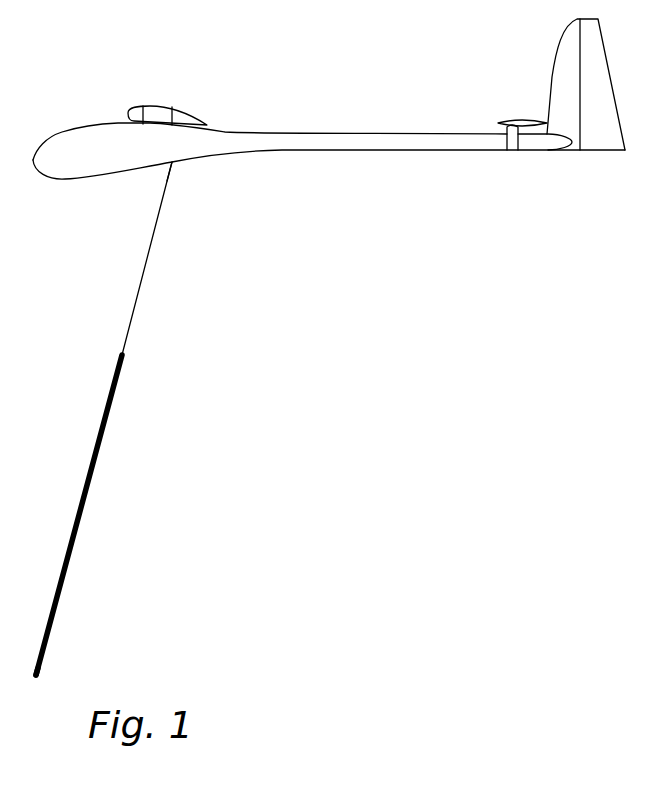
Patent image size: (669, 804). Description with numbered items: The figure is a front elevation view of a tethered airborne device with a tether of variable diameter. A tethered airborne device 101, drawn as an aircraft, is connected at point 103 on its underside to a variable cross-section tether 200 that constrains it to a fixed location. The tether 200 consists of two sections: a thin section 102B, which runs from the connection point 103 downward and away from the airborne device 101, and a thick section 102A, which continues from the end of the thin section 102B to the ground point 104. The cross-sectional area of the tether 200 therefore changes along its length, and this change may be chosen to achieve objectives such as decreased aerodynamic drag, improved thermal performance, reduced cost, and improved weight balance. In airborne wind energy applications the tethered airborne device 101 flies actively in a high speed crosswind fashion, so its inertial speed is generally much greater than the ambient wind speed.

The tethered airborne device 101 is at (226, 133).
The thick section 102A is at (96, 478).
The thin section 102B is at (133, 311).
The connection point 103 is at (172, 163).
The ground point 104 is at (45, 664).
The variable cross-section tether 200 is at (155, 353).